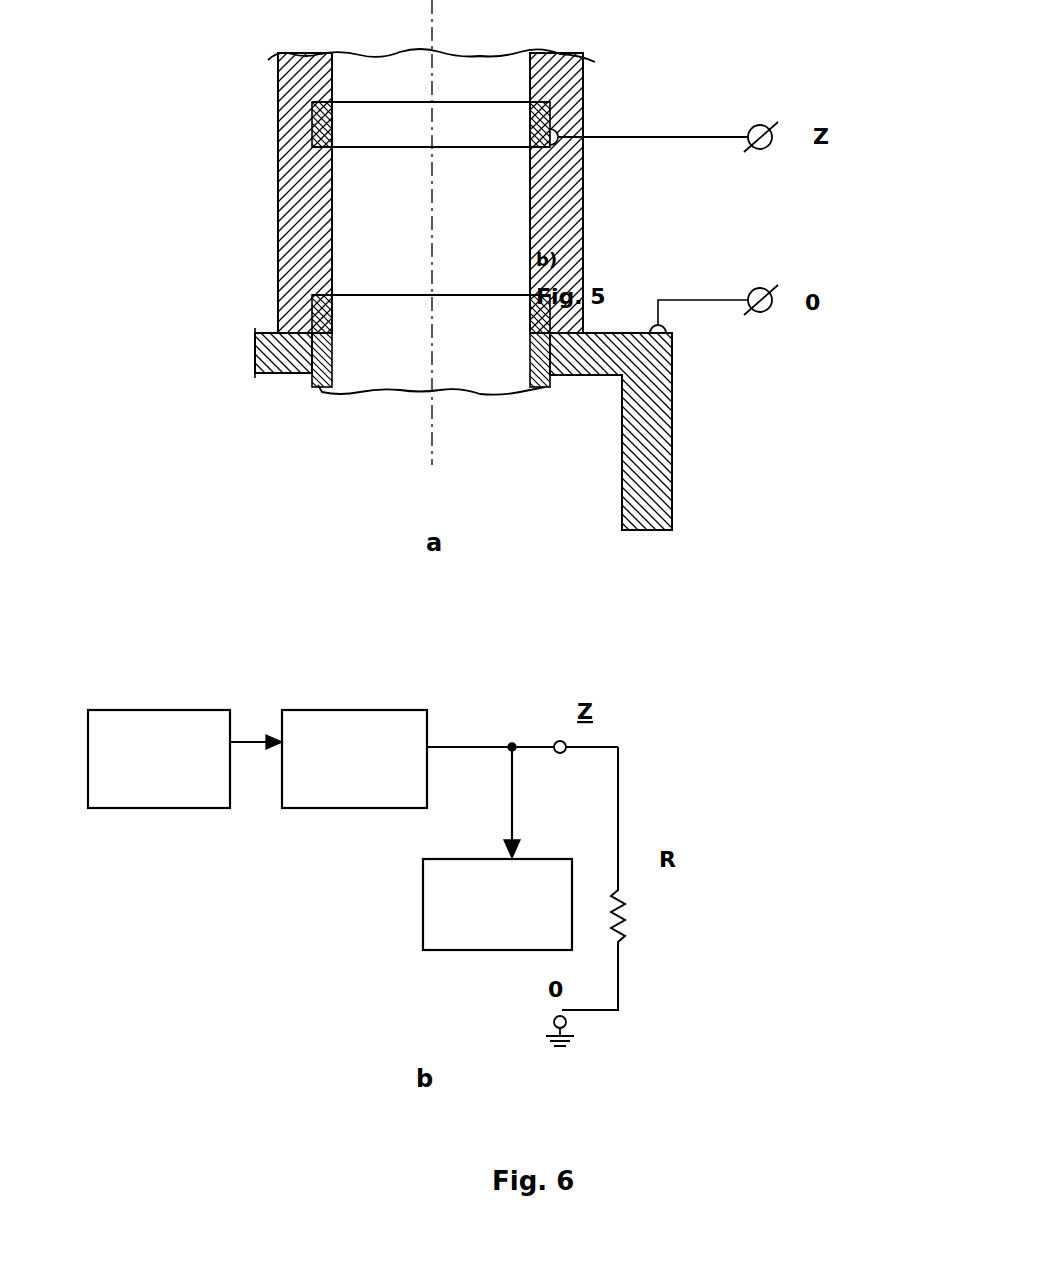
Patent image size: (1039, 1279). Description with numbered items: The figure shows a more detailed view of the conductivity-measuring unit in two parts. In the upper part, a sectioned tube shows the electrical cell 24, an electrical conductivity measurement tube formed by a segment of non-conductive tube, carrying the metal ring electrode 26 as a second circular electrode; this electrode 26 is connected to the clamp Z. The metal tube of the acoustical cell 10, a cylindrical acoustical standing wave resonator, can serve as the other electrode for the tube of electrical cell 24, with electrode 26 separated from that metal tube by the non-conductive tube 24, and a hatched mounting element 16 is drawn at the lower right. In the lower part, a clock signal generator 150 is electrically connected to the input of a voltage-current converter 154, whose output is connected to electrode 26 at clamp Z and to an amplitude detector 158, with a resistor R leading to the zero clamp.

The electrical cell 24 is at (293, 72).
The metal ring electrode 26 is at (597, 62).
The acoustical cell 10 is at (312, 345).
The mounting leg 16 is at (640, 470).
The clock signal generator 150 is at (208, 808).
The voltage-current converter 154 is at (405, 808).
The amplitude detector 158 is at (475, 927).